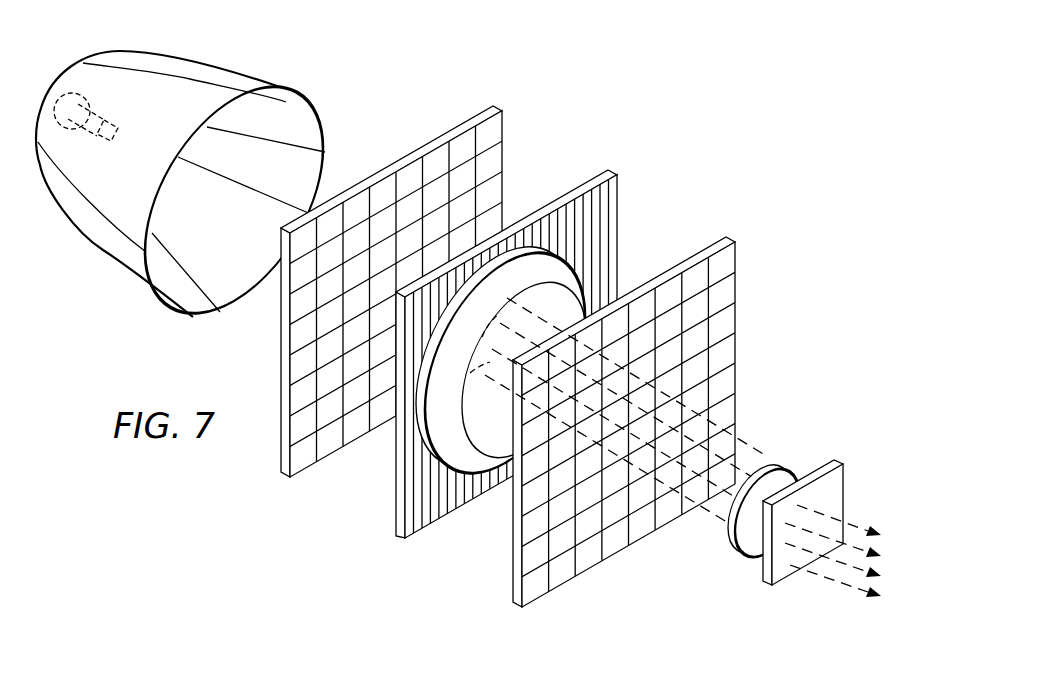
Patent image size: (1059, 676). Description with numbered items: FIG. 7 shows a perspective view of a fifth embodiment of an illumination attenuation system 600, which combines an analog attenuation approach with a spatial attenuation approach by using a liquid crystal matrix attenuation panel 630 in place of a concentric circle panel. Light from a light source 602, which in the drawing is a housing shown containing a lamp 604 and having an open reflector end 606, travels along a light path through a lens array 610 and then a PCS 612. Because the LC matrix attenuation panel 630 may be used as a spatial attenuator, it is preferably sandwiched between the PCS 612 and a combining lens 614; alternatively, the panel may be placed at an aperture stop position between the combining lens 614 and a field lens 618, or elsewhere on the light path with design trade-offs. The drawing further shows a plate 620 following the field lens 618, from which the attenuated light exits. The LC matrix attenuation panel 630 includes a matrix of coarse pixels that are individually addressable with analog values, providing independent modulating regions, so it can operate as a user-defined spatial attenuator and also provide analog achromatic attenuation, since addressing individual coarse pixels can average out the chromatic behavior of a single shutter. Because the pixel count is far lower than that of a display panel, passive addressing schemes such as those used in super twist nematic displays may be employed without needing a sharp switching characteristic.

The illumination attenuation system 600 is at (616, 69).
The light source 602 is at (113, 262).
The light source (bulb) 604 is at (111, 96).
The reflector opening 606 is at (290, 103).
The lens array 610 is at (500, 108).
The PCS 612 is at (612, 174).
The combining lens 614 is at (470, 480).
The field lens 618 is at (790, 465).
The output plate 620 is at (768, 586).
The LC matrix attenuation panel 630 is at (733, 243).